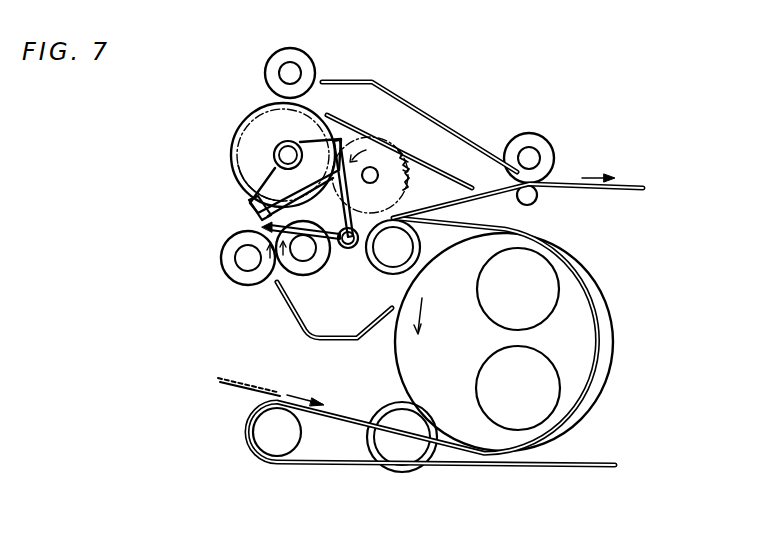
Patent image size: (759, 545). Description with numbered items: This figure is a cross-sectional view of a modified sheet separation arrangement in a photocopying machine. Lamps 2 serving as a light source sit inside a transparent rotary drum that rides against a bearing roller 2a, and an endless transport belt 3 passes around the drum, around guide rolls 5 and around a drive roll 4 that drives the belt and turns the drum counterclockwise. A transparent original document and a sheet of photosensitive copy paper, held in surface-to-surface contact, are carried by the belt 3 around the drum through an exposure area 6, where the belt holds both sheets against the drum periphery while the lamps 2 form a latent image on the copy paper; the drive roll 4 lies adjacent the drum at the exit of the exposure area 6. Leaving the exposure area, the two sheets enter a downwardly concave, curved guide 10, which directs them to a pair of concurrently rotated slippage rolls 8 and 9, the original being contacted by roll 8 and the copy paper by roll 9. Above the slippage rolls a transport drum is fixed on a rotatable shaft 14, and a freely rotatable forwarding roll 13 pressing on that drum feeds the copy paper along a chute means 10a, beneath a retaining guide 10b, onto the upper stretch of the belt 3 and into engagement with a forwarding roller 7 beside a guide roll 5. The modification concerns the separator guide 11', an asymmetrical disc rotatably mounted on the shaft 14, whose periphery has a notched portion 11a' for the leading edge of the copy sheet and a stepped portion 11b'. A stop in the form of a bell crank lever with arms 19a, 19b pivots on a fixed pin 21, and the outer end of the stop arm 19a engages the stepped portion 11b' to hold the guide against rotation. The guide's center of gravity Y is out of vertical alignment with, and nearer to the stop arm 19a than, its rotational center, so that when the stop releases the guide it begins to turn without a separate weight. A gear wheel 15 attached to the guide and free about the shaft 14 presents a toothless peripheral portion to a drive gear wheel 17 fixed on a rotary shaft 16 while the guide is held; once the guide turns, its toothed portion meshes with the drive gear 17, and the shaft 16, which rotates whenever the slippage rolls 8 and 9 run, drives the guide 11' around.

The lamps 2 is at (534, 306).
The bearing roller 2a is at (431, 452).
The endless transport belt 3 is at (632, 186).
The drive roll 4 is at (412, 242).
The guide rolls 5 is at (277, 443).
The exposure area 6 is at (614, 346).
The forwarding roller 7 is at (541, 147).
The slippage roll 8 is at (234, 274).
The slippage roll 9 is at (305, 268).
The curved guide 10 is at (340, 341).
The chute means 10a is at (398, 150).
The retaining guide 10b is at (397, 96).
The separator guide 11' is at (247, 152).
The pad 11a' is at (215, 212).
The stepped portion 11b' is at (373, 133).
The forwarding roll 13 is at (272, 73).
The rotatable shaft 14 is at (276, 154).
The gear wheel 15 is at (237, 168).
The rotary shaft 16 is at (407, 172).
The drive gear wheel 17 is at (408, 162).
The stop arm 19a is at (378, 176).
The rod 19b is at (268, 228).
The fixed pin 21 is at (345, 250).
The center of gravity Y is at (318, 148).